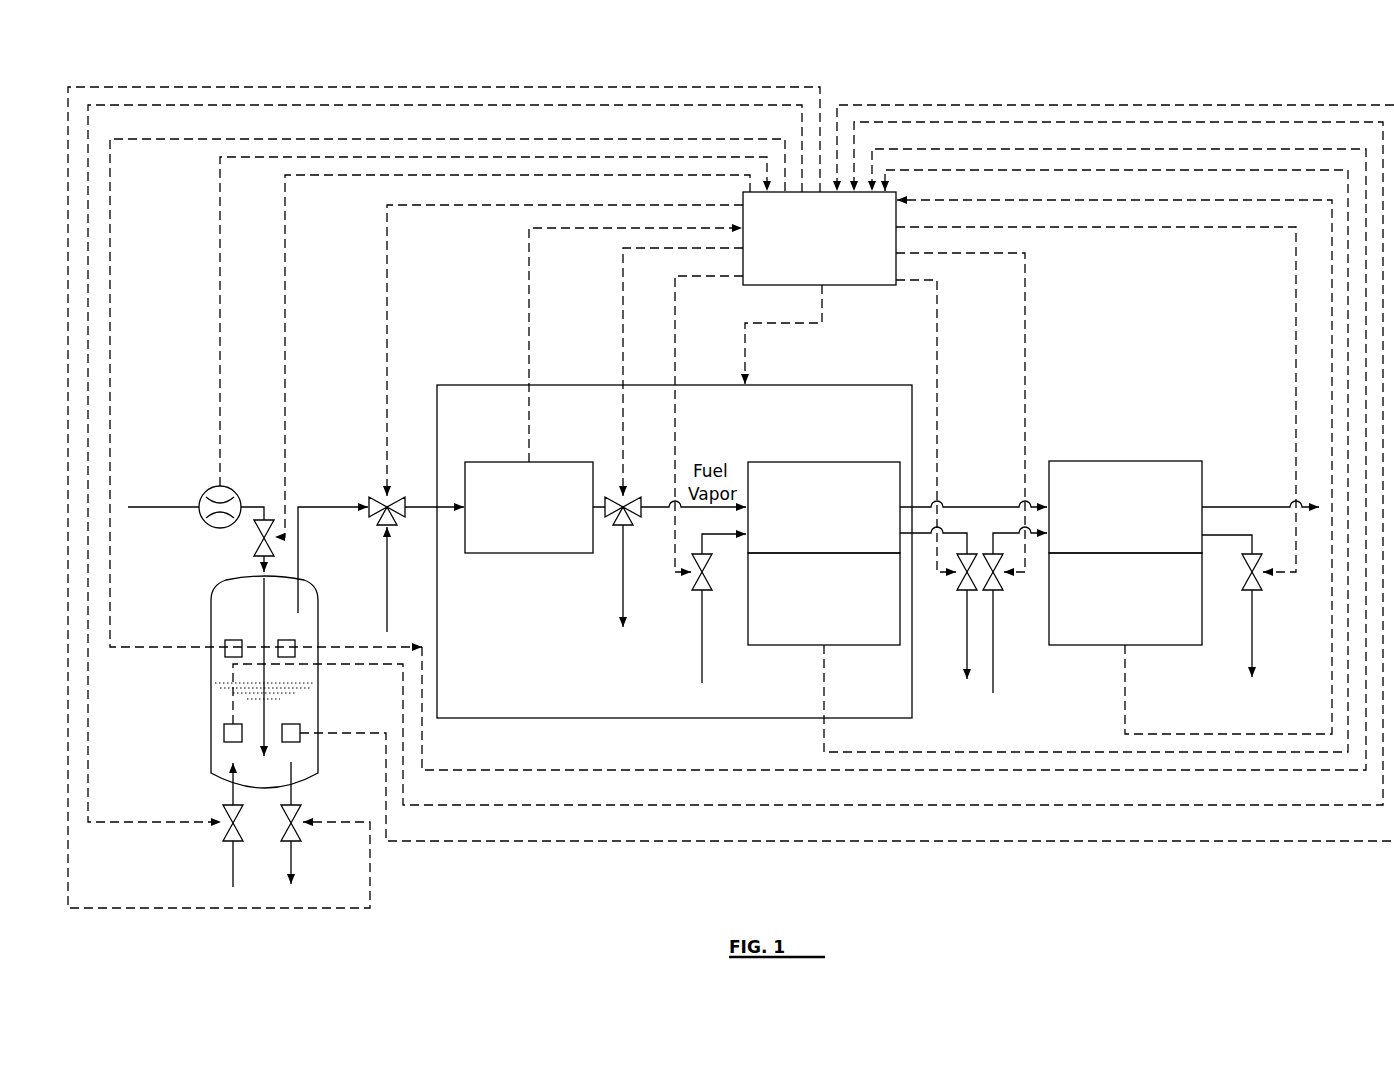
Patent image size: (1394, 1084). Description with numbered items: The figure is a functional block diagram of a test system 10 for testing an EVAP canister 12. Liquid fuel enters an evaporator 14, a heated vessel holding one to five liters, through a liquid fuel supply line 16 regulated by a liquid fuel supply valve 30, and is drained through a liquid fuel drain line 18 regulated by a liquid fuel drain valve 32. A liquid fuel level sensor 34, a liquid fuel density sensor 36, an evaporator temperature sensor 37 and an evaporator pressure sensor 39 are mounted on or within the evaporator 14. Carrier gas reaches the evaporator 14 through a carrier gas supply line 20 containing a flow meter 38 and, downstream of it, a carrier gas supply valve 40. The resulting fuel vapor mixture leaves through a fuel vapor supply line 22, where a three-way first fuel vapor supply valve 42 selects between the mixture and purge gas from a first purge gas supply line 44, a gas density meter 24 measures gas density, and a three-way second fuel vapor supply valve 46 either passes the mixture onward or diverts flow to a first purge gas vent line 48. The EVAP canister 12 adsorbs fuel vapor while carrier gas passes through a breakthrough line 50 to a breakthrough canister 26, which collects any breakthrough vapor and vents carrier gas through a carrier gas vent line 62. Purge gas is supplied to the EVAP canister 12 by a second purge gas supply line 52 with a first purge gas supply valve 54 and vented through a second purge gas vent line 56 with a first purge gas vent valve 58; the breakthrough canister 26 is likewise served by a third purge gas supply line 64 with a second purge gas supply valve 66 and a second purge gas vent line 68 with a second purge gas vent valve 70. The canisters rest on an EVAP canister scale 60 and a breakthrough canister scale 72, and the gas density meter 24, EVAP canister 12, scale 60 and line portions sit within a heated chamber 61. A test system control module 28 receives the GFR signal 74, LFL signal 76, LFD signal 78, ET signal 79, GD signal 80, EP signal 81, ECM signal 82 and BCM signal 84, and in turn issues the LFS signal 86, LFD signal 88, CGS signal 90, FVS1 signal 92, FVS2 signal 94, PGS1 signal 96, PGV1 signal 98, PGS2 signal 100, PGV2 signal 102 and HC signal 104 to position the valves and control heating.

The test system 10 is at (1237, 66).
The EVAP canister 12 is at (795, 462).
The evaporator 14 is at (210, 613).
The liquid fuel supply line 16 is at (232, 797).
The liquid fuel drain line 18 is at (293, 797).
The carrier gas supply line 20 is at (172, 509).
The fuel vapor supply line 22 is at (352, 512).
The gas density meter 24 is at (507, 462).
The breakthrough canister 26 is at (1095, 461).
The test system control module 28 is at (829, 287).
The liquid fuel supply valve 30 is at (227, 817).
The liquid fuel drain valve 32 is at (300, 818).
The liquid fuel level sensor 34 is at (223, 728).
The liquid fuel density sensor 36 is at (300, 725).
The evaporator temperature sensor 37 is at (297, 645).
The flow meter 38 is at (200, 518).
The evaporator pressure sensor 39 is at (225, 655).
The carrier gas supply valve 40 is at (253, 538).
The first fuel vapor supply valve 42 is at (399, 496).
The first purge gas supply line 44 is at (390, 587).
The second fuel vapor supply valve 46 is at (640, 497).
The first purge gas vent line 48 is at (627, 590).
The breakthrough line 50 is at (1015, 502).
The second purge gas supply line 52 is at (705, 652).
The first purge gas supply valve 54 is at (694, 583).
The second purge gas vent line 56 is at (964, 663).
The first purge gas vent valve 58 is at (960, 587).
The EVAP canister scale 60 is at (793, 647).
The heated chamber 61 is at (845, 385).
The carrier gas vent line 62 is at (1262, 510).
The third purge gas supply line 64 is at (997, 662).
The second purge gas supply valve 66 is at (1003, 587).
The second purge gas vent line 68 is at (1250, 642).
The second purge gas vent valve 70 is at (1257, 587).
The breakthrough canister scale 72 is at (1095, 647).
The gas flow rate (GFR) signal 74 is at (237, 221).
The liquid fuel level (LFL) signal 76 is at (672, 782).
The liquid fuel density (LFD) signal 78 is at (675, 862).
The evaporator temperature (ET) signal 79 is at (672, 748).
The gas density (GD) signal 80 is at (550, 318).
The evaporator pressure (EP) signal 81 is at (157, 670).
The EVAP canister mass (ECM) signal 82 is at (1051, 733).
The breakthrough canister mass (BCM) signal 84 is at (1246, 717).
The liquid fuel supply (LFS) signal 86 is at (163, 128).
The liquid fuel drain (LFD) signal 88 is at (161, 66).
The carrier gas supply (CGS) signal 90 is at (307, 262).
The first fuel vapor supply (FVS1) signal 92 is at (407, 292).
The second fuel vapor supply (FVS2) signal 94 is at (623, 370).
The first purge gas supply (PGS1) signal 96 is at (715, 298).
The first purge gas vent (PGV1) signal 98 is at (916, 335).
The second purge gas supply (PGS2) signal 100 is at (1002, 308).
The second purge gas vent (PGV2) signal 102 is at (1215, 248).
The heater control (HC) signal 104 is at (793, 350).